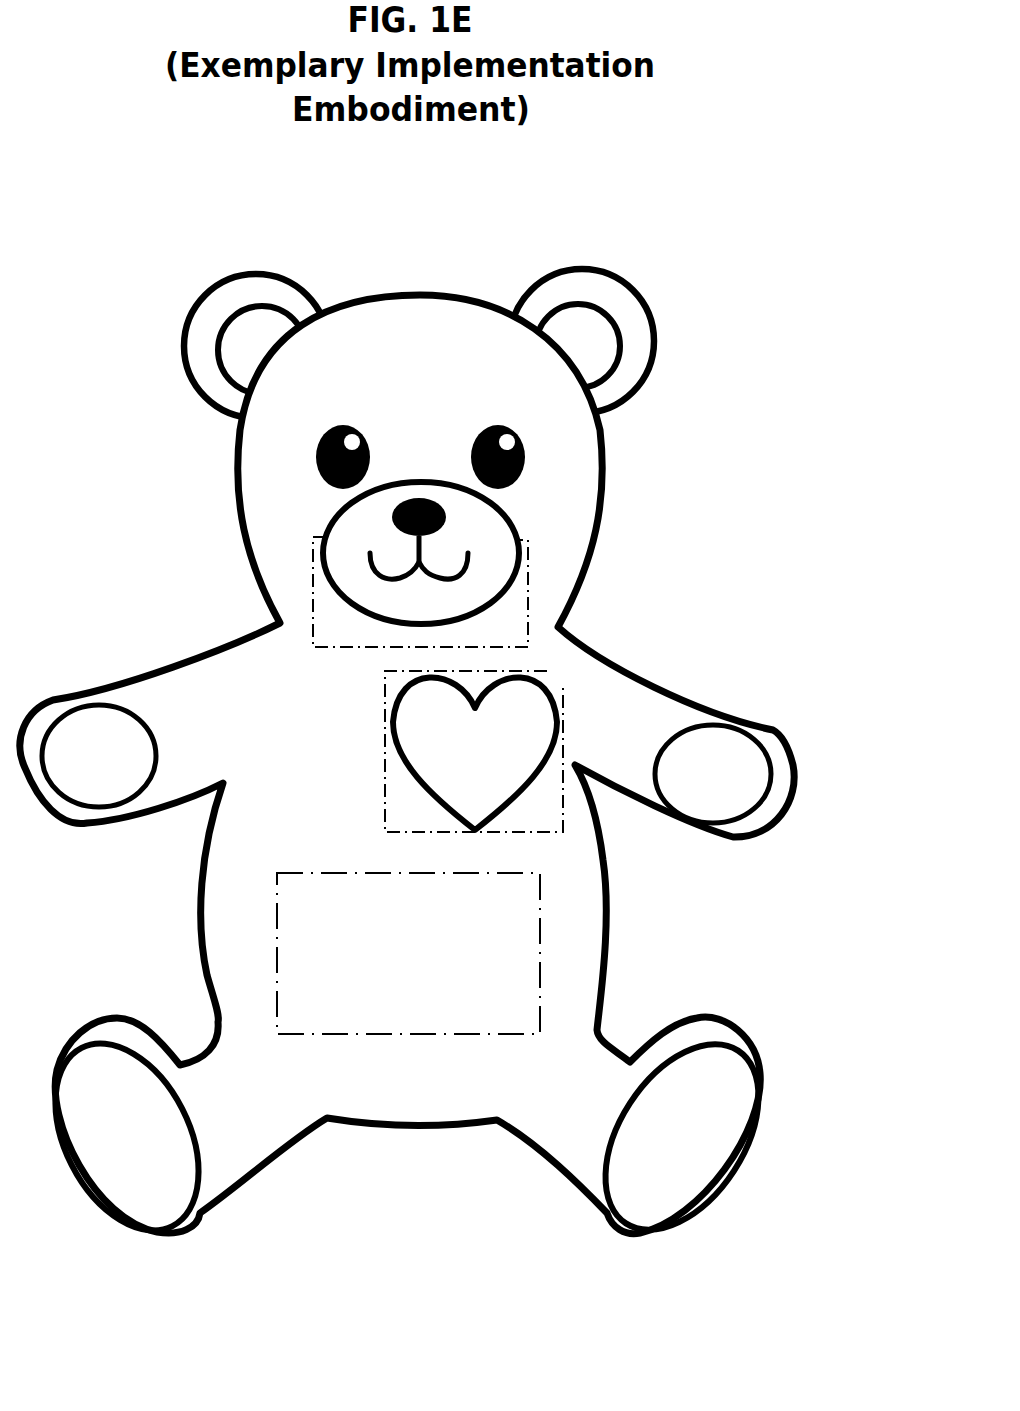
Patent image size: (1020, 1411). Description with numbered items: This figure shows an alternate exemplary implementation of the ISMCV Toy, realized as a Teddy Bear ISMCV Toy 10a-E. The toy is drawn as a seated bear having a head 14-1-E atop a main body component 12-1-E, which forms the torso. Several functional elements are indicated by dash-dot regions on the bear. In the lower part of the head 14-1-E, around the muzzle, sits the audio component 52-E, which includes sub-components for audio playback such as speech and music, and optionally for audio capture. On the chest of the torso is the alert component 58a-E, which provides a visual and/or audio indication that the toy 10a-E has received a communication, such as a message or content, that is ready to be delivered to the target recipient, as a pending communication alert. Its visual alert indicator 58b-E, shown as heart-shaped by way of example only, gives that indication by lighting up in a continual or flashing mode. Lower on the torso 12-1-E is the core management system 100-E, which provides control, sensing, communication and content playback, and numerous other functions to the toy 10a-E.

The Teddy Bear ISMCV Toy 10a-E is at (433, 743).
The head 14-1-E is at (240, 503).
The main body component 12-1-E is at (195, 890).
The audio component 52-E is at (530, 598).
The alert component 58a-E is at (385, 763).
The visual alert indicator 58b-E is at (543, 685).
The core management system 100-E is at (393, 1035).